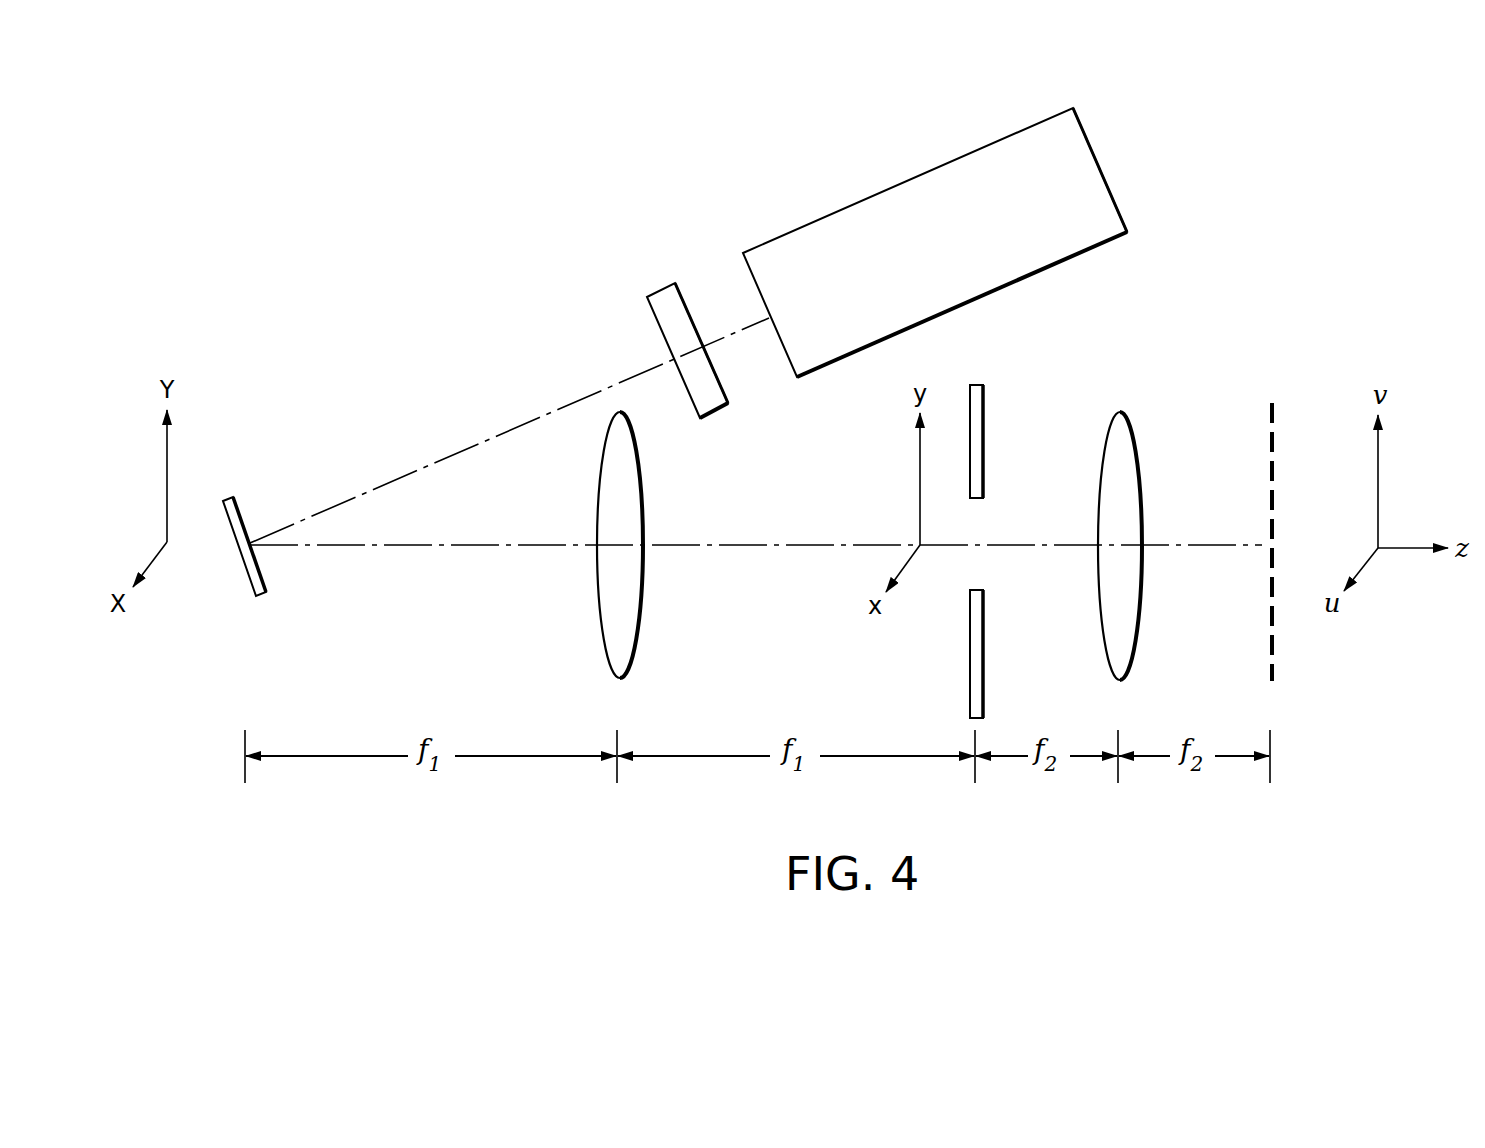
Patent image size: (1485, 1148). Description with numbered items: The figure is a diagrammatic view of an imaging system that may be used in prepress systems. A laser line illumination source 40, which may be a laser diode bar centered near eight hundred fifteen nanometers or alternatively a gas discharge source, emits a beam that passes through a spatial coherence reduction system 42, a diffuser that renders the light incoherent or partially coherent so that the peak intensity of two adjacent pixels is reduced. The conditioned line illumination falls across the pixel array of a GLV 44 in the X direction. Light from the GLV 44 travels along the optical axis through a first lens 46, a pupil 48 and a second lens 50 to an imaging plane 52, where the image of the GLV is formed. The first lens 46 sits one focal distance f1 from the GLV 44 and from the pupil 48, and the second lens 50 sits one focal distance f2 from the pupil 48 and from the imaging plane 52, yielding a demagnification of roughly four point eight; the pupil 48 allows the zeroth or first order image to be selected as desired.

The laser line illumination source 40 is at (878, 192).
The spatial coherence reduction system 42 is at (657, 292).
The GLV 44 is at (238, 506).
The first lens 46 is at (641, 457).
The pupil 48 is at (985, 410).
The second lens 50 is at (1140, 436).
The imaging plane 52 is at (1276, 414).